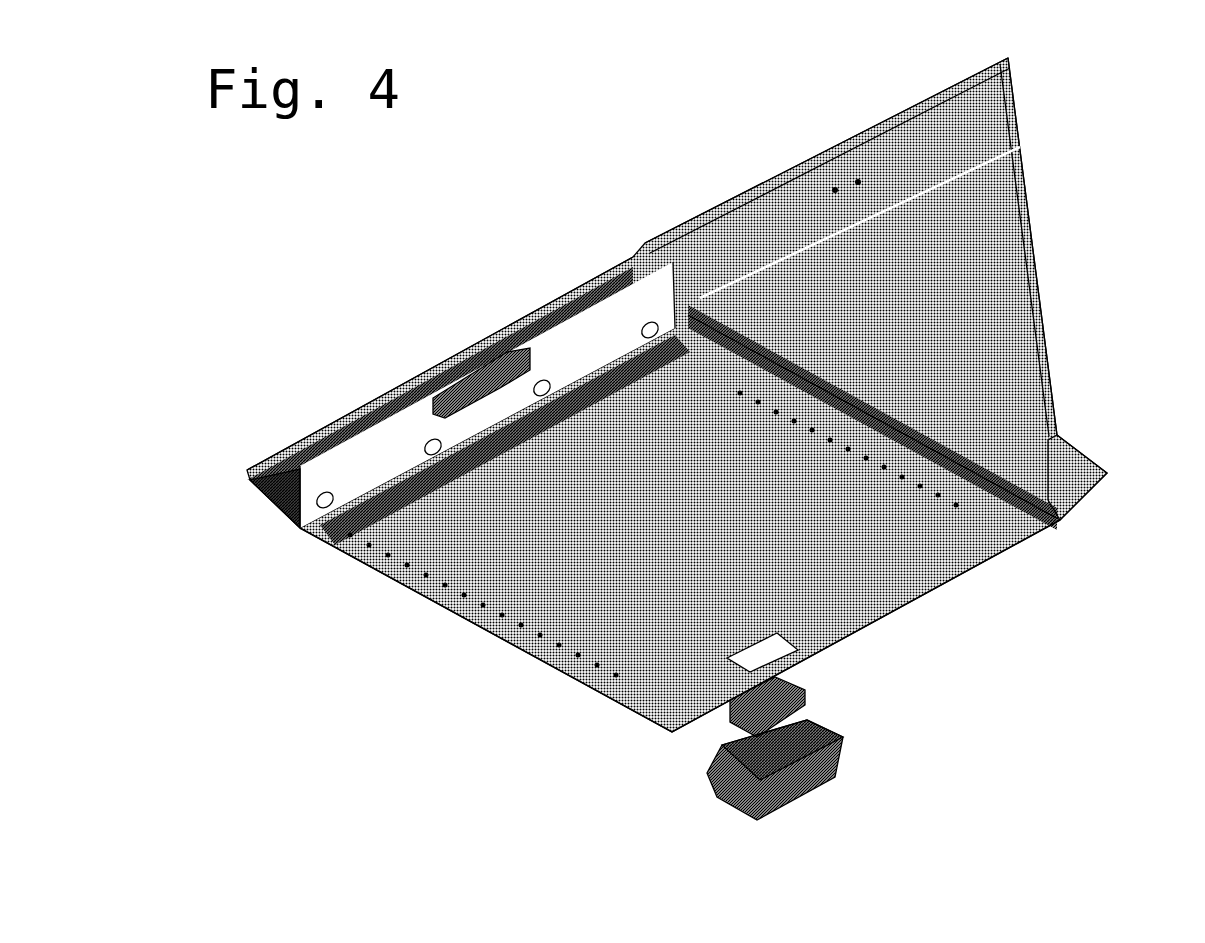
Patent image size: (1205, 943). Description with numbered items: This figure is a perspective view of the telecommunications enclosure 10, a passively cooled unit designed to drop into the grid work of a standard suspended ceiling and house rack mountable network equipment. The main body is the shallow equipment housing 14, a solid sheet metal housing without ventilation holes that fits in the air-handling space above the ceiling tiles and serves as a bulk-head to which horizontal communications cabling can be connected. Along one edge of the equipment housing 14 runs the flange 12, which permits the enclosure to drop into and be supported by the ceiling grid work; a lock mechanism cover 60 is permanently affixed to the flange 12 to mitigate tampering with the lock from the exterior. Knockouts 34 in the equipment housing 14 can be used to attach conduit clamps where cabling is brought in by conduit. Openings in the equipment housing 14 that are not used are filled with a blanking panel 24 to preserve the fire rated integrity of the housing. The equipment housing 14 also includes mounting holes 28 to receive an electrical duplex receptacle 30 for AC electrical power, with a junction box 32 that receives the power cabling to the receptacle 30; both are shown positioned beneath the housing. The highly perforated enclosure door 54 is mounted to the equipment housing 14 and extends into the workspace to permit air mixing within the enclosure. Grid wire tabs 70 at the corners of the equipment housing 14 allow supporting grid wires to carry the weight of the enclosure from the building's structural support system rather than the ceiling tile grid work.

The telecommunications enclosure 10 is at (396, 254).
The flange 12 is at (288, 463).
The equipment housing 14 is at (960, 552).
The blanking panel 24 is at (510, 460).
The mounting holes 28 is at (790, 645).
The electrical duplex receptacle 30 is at (800, 696).
The junction box 32 is at (830, 746).
The knockouts 34 is at (642, 330).
The enclosure door 54 is at (1022, 148).
The lock mechanism cover 60 is at (470, 368).
The grid wire tabs 70 is at (302, 530).